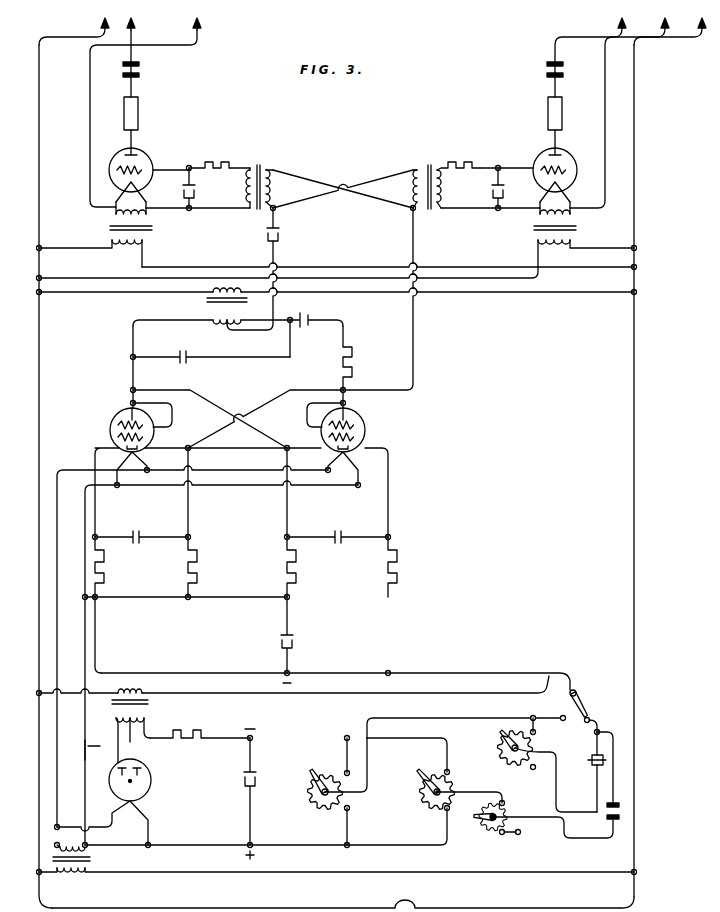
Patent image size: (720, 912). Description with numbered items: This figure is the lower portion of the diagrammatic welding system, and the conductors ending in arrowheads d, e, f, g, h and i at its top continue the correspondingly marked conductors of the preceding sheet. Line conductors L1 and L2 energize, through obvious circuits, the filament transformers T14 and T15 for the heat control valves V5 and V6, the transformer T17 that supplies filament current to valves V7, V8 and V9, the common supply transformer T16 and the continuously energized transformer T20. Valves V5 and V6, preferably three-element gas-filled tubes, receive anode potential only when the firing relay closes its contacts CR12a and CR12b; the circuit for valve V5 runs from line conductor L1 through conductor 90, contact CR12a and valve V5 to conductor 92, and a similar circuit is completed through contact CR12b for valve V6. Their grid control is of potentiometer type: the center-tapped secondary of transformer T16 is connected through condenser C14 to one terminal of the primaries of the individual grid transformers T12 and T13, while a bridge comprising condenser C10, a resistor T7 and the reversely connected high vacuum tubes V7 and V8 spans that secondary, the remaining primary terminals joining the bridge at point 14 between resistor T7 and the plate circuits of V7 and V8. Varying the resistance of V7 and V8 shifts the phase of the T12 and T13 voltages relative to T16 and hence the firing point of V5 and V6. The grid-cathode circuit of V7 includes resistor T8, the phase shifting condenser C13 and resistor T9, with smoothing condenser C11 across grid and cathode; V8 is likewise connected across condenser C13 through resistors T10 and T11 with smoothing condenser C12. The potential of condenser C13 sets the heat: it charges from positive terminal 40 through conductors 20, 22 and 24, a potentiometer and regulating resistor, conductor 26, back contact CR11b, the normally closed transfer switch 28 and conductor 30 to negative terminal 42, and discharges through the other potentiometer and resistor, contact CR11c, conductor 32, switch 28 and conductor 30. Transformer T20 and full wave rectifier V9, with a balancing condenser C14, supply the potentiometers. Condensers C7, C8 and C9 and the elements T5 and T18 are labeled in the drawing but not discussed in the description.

The conductor arrowhead d is at (74, 23).
The conductor arrowhead e is at (131, 16).
The conductor arrowhead f is at (198, 16).
The conductor arrowhead g is at (590, 32).
The conductor arrowhead h is at (620, 105).
The conductor arrowhead i is at (670, 23).
The conductor 90 is at (132, 28).
The conductor 92 is at (200, 36).
The contact of firing relay CR12a is at (140, 66).
The contact of firing relay CR12b is at (547, 74).
The line conductor L1 is at (42, 348).
The line conductor L2 is at (637, 388).
The heat control valve V5 is at (150, 158).
The heat control valve V6 is at (545, 152).
The high vacuum tube V7 is at (155, 436).
The high vacuum tube V8 is at (366, 432).
The full wave rectifier V9 is at (153, 778).
The capacitor C7 is at (195, 190).
The capacitor C8 is at (491, 190).
The capacitor C9 is at (186, 364).
The condenser C10 is at (309, 313).
The smoothing condenser C11 is at (136, 544).
The smoothing condenser C12 is at (338, 544).
The phase shifting condenser C13 is at (294, 642).
The condenser C14 is at (280, 236).
The transformer winding T5 is at (212, 162).
The bridge resistor T7 is at (353, 352).
The resistor T8 is at (105, 578).
The resistor T9 is at (198, 572).
The resistor T10 is at (297, 577).
The resistor T11 is at (397, 577).
The grid transformer T12 is at (258, 165).
The grid transformer T13 is at (428, 165).
The filament transformer T14 is at (148, 229).
The filament transformer T15 is at (578, 229).
The supply transformer T16 is at (210, 300).
The filament transformer T17 is at (78, 875).
The tap switch T18 is at (418, 808).
The transformer T20 is at (150, 704).
The bridge connection point 14 is at (347, 392).
The conductor 20 is at (232, 598).
The conductor 22 is at (95, 752).
The conductor 24 is at (285, 851).
The conductor 26 is at (527, 817).
The transfer switch 28 is at (591, 704).
The conductor 30 is at (346, 676).
The conductor 32 is at (614, 778).
The positive terminal 40 is at (290, 598).
The negative terminal 42 is at (290, 673).
The contact of control relay CR11b is at (590, 754).
The contact of control relay CR11c is at (620, 812).